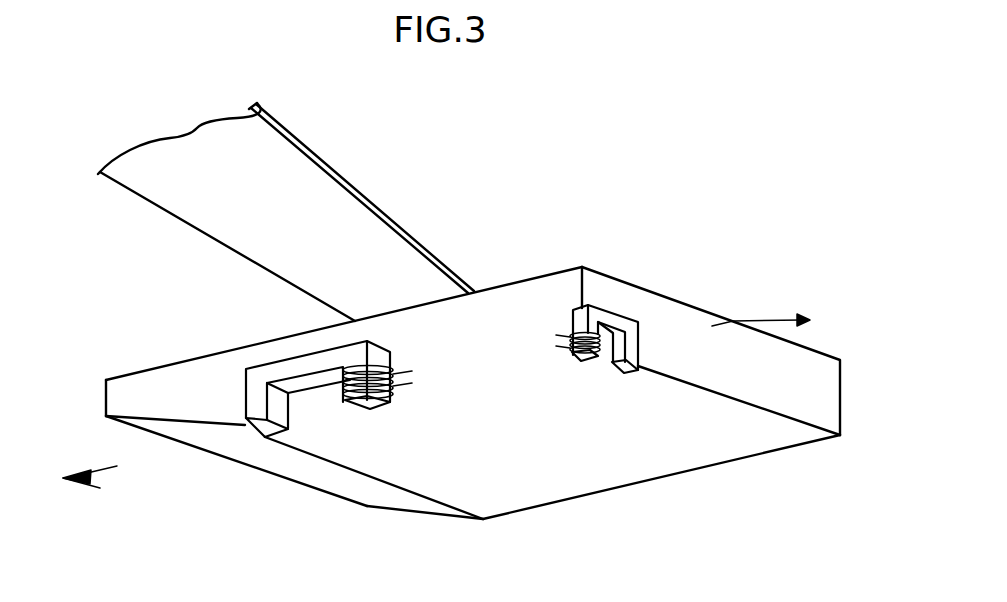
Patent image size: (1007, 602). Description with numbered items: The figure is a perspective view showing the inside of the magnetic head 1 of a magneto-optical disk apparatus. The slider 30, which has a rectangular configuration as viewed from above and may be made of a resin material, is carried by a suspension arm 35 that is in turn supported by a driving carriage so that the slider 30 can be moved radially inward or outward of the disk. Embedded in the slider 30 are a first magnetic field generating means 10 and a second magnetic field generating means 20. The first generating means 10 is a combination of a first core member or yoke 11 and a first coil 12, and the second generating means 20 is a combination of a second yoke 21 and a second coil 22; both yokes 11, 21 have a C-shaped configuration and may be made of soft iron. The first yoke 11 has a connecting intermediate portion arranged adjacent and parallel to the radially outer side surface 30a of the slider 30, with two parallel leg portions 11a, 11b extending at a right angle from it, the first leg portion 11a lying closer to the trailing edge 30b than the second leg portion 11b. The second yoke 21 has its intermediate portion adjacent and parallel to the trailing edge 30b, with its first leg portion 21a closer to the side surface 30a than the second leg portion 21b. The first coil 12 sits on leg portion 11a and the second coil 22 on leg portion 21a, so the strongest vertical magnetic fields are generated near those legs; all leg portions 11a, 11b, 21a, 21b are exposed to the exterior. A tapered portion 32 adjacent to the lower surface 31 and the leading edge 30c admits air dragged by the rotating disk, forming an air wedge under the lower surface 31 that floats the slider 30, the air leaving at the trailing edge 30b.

The magnetic head 1 is at (641, 237).
The first magnetic field generating means 10 is at (294, 347).
The first core member (yoke) 11 is at (343, 356).
The first leg portion 11a is at (376, 410).
The second leg portion 11b is at (272, 440).
The first coil 12 is at (400, 378).
The second magnetic field generating means 20 is at (629, 300).
The second core member (yoke) 21 is at (632, 322).
The first leg portion 21a is at (588, 362).
The second leg portion 21b is at (628, 375).
The second coil 22 is at (552, 338).
The slider 30 is at (546, 268).
The radially outer side surface 30a is at (215, 374).
The trailing edge 30b is at (818, 398).
The leading edge 30c is at (177, 443).
The lower surface 31 is at (586, 466).
The tapered portion 32 is at (348, 486).
The suspension arm 35 is at (343, 179).